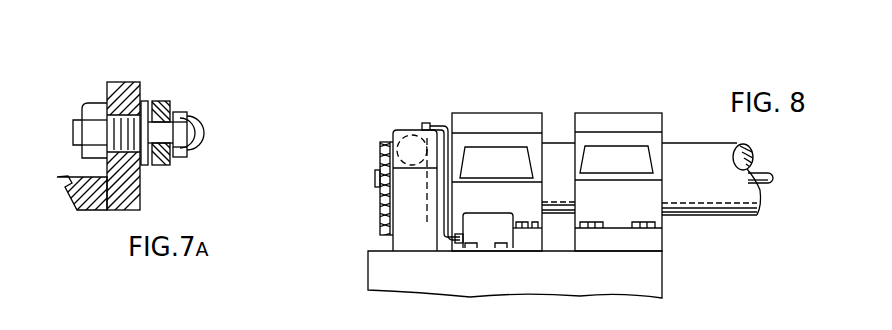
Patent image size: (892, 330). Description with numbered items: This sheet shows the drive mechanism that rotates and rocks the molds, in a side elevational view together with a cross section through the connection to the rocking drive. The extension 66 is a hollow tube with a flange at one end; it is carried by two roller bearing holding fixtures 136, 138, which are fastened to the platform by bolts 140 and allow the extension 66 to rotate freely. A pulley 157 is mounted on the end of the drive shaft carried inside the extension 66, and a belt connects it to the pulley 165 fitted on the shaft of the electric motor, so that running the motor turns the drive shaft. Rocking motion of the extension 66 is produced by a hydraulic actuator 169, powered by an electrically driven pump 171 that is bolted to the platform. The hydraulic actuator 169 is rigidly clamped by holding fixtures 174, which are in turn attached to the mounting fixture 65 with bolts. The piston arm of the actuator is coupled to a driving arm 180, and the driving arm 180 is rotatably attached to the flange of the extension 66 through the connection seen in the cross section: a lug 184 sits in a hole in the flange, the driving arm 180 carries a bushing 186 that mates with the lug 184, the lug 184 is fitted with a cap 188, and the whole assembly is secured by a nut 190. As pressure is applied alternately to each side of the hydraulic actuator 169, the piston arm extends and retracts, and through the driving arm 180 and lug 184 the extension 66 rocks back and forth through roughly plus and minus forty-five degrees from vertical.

In FIG. 7A, the nut 190 is at (90, 108).
In FIG. 7A, the lug 184 is at (147, 100).
In FIG. 7A, the driving arm 180 is at (168, 102).
In FIG. 7A, the bushing 186 is at (190, 127).
In FIG. 7A, the cap 188 is at (197, 143).
In FIG. 8, the hydraulic actuator 169 is at (410, 130).
In FIG. 8, the holding fixtures 174 is at (412, 238).
In FIG. 8, the pulley 157 is at (380, 204).
In FIG. 8, the pulley 165 is at (378, 230).
In FIG. 8, the roller bearing holding fixture 138 is at (507, 78).
In FIG. 8, the roller bearing holding fixture 136 is at (597, 113).
In FIG. 8, the electrically driven pump 171 is at (487, 237).
In FIG. 8, the bolts 140 is at (645, 212).
In FIG. 8, the mounting fixture 65 is at (565, 245).
In FIG. 8, the extension 66 is at (703, 207).